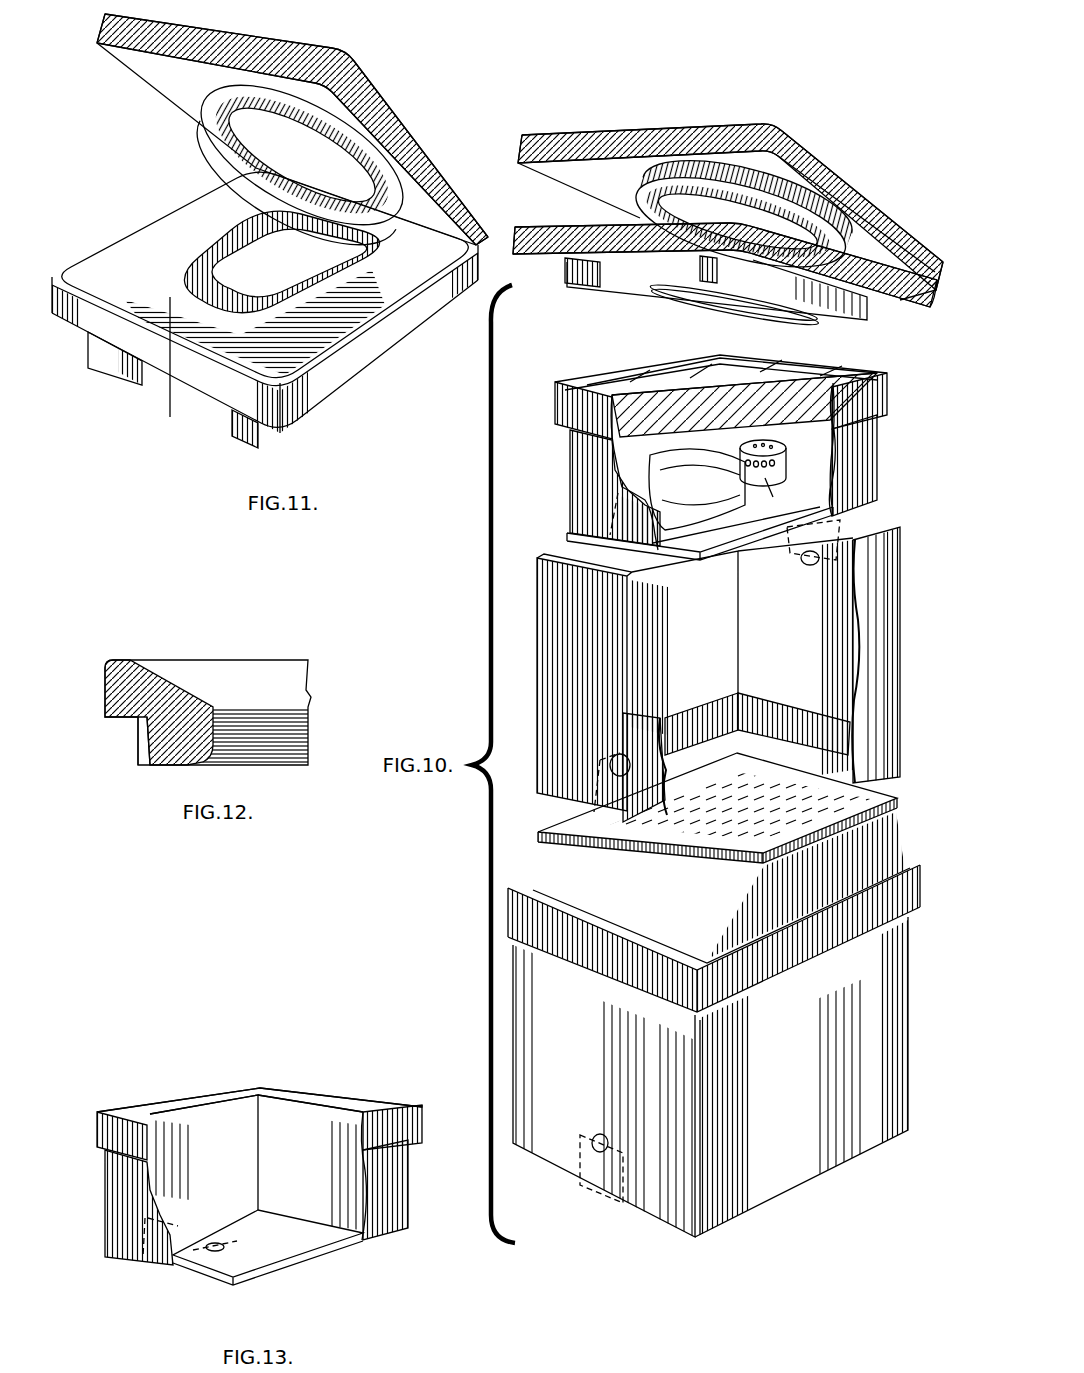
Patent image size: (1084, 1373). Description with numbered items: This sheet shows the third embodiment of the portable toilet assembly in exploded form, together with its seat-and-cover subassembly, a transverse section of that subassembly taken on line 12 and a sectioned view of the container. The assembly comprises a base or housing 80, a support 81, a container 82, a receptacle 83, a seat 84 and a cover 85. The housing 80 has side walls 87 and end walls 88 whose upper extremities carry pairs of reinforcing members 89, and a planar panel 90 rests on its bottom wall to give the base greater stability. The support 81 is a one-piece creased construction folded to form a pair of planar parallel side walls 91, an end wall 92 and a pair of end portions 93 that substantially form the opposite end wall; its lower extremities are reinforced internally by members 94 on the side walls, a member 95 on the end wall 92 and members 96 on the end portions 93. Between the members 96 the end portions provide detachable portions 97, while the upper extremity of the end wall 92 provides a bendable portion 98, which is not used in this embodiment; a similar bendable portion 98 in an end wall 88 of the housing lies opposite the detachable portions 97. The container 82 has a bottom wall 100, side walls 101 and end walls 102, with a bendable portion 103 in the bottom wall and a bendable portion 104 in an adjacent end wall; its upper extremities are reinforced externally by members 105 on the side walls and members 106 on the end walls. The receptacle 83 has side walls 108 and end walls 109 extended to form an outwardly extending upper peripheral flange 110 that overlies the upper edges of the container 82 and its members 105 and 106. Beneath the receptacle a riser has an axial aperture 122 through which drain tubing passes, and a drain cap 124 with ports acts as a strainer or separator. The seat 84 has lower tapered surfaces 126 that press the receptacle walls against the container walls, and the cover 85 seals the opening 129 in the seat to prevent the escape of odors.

In FIG. 11, the section line 12 is at (170, 297).
In FIG. 10, the base or housing 80 is at (732, 1024).
In FIG. 10, the support 81 is at (747, 695).
In FIG. 12, the container 82 is at (218, 698).
In FIG. 13, the container 82 is at (255, 1157).
In FIG. 10, the container 82 is at (737, 461).
In FIG. 10, the receptacle 83 is at (695, 454).
In FIG. 11, the seat 84 is at (258, 316).
In FIG. 10, the seat 84 is at (718, 256).
In FIG. 11, the cover 85 is at (100, 19).
In FIG. 10, the cover 85 is at (530, 130).
In FIG. 10, the side walls 87 is at (642, 905).
In FIG. 10, the end walls 88 is at (852, 875).
In FIG. 10, the members 89 is at (515, 882).
In FIG. 10, the planar panel 90 is at (852, 800).
In FIG. 10, the side walls 91 is at (677, 627).
In FIG. 10, the end wall 92 is at (842, 595).
In FIG. 10, the end portions 93 is at (650, 737).
In FIG. 10, the members 94 is at (710, 722).
In FIG. 10, the member 95 is at (770, 717).
In FIG. 10, the members 96 is at (672, 812).
In FIG. 10, the detachable portions 97 is at (613, 787).
In FIG. 10, the bendable portion 98 is at (826, 532).
In FIG. 13, the bottom wall 100 is at (297, 1240).
In FIG. 10, the bottom wall 100 is at (713, 550).
In FIG. 13, the side walls 101 is at (222, 1110).
In FIG. 10, the side walls 101 is at (868, 468).
In FIG. 13, the end walls 102 is at (317, 1113).
In FIG. 10, the end walls 102 is at (587, 485).
In FIG. 13, the bendable portion 103 is at (202, 1250).
In FIG. 13, the bendable portion 104 is at (155, 1248).
In FIG. 10, the bendable portion 104 is at (625, 530).
In FIG. 13, the members 105 is at (162, 1100).
In FIG. 13, the members 106 is at (365, 1098).
In FIG. 10, the side walls 108 is at (645, 378).
In FIG. 10, the end walls 109 is at (752, 378).
In FIG. 10, the upper peripheral flange 110 is at (890, 382).
In FIG. 10, the axial aperture 122 is at (741, 485).
In FIG. 10, the cap 124 is at (773, 497).
In FIG. 11, the lower tapered surfaces 126 is at (316, 415).
In FIG. 12, the lower tapered surfaces 126 is at (140, 745).
In FIG. 10, the lower tapered surfaces 126 is at (578, 275).
In FIG. 11, the opening 129 is at (262, 268).
In FIG. 12, the opening 129 is at (291, 717).